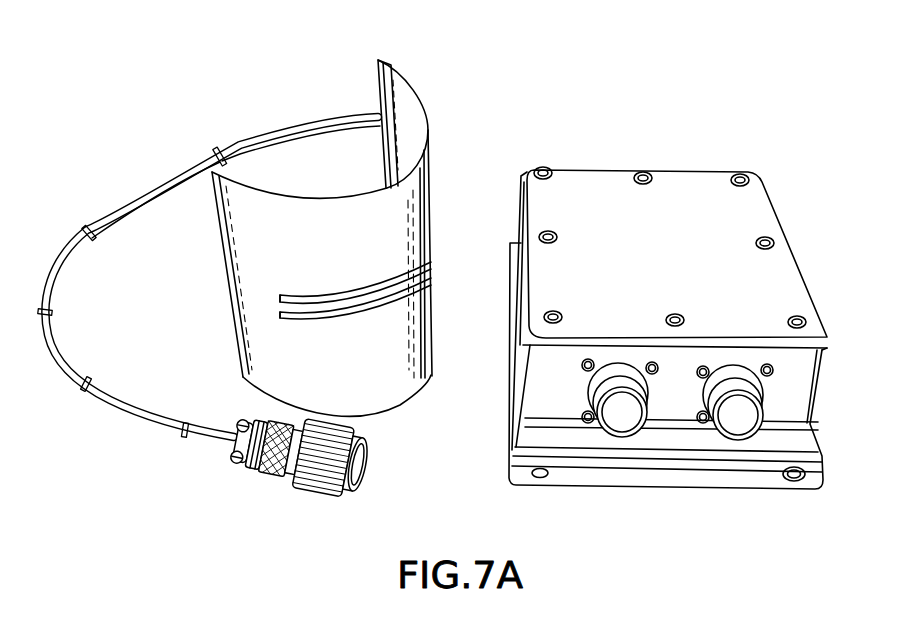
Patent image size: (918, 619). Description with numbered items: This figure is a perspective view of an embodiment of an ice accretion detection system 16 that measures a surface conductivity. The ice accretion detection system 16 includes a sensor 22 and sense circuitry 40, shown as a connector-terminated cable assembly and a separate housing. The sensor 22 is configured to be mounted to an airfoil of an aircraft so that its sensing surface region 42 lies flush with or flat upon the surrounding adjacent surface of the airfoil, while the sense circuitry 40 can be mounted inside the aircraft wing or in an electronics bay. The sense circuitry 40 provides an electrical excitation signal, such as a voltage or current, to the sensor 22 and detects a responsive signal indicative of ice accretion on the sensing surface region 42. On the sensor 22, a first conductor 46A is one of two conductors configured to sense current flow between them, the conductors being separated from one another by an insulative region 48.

The ice accretion detection system 16 is at (432, 250).
The sense circuitry 40 is at (760, 181).
The sensing surface region 42 is at (430, 222).
The sensor 22 is at (442, 278).
The first conductor 46A is at (333, 298).
The insulative region 48 is at (272, 306).